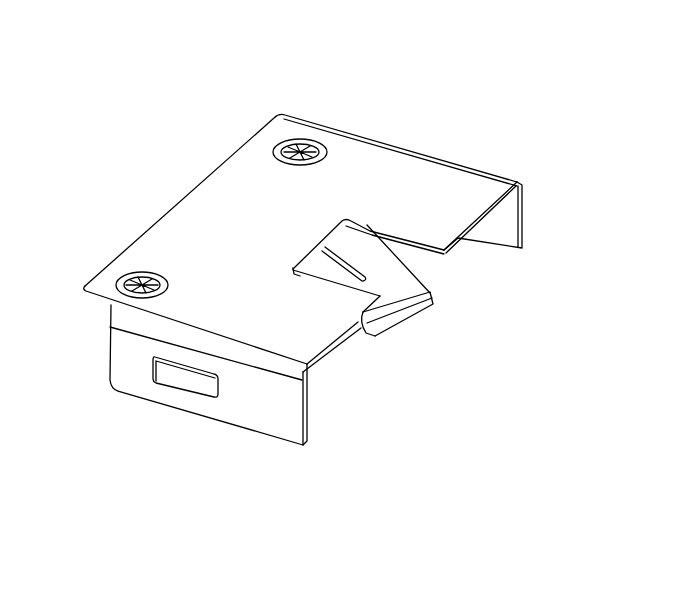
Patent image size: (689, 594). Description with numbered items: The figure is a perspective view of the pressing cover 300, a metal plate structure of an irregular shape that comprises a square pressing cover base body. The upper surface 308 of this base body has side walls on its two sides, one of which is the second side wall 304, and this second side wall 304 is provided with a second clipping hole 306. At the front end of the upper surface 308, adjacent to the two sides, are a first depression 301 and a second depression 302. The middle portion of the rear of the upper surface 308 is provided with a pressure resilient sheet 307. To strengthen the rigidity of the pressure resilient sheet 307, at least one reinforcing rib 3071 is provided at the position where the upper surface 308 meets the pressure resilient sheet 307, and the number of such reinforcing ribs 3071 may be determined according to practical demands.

The pressing cover 300 is at (412, 427).
The first depression 301 is at (302, 143).
The second depression 302 is at (117, 283).
The second side wall 304 is at (253, 398).
The second clipping hole 306 is at (178, 372).
The pressure resilient sheet 307 is at (432, 297).
The reinforcing rib 3071 is at (373, 227).
The upper surface 308 is at (245, 217).